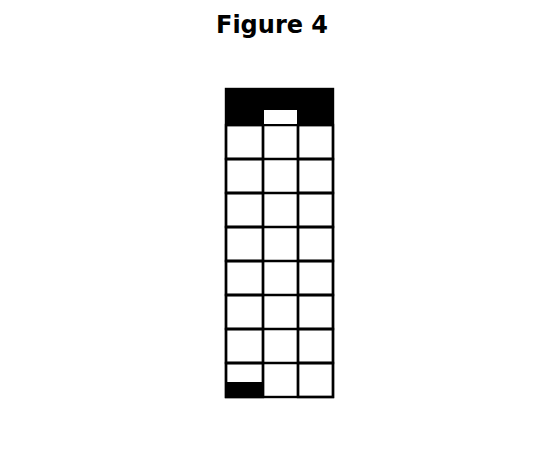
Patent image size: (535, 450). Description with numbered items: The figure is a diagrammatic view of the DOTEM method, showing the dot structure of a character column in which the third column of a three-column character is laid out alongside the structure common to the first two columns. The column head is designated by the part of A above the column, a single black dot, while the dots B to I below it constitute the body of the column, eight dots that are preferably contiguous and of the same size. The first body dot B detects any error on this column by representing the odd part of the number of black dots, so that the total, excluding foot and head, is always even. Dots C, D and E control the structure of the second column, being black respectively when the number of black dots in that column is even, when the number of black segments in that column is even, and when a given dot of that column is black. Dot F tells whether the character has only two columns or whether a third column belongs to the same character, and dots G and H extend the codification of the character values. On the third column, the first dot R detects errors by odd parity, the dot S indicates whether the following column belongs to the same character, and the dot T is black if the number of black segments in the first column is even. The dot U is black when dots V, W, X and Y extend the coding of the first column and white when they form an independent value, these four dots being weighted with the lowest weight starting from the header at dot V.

The column head A is at (203, 90).
The first dot of the body B is at (216, 143).
The dot C is at (214, 183).
The dot D is at (216, 211).
The dot E is at (214, 251).
The dot F is at (216, 279).
The dot G is at (214, 319).
The dot H is at (216, 347).
The dot I is at (214, 387).
The first dot R is at (343, 143).
The dot S is at (333, 177).
The dot T is at (343, 211).
The dot U is at (333, 245).
The dot V is at (343, 279).
The dot W is at (333, 313).
The dot X is at (343, 347).
The dot Y is at (333, 381).